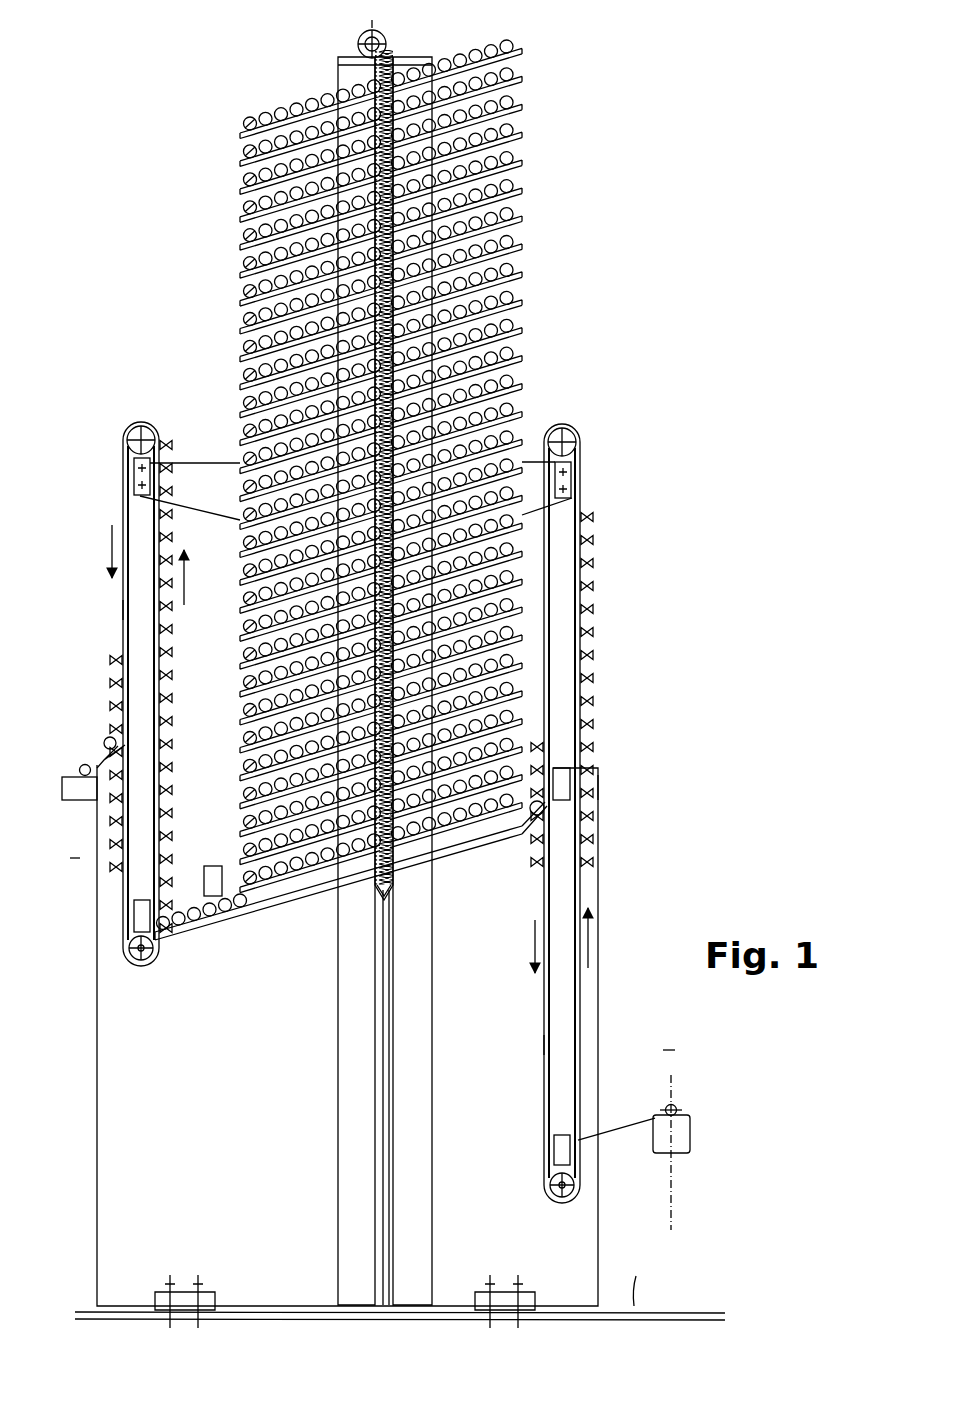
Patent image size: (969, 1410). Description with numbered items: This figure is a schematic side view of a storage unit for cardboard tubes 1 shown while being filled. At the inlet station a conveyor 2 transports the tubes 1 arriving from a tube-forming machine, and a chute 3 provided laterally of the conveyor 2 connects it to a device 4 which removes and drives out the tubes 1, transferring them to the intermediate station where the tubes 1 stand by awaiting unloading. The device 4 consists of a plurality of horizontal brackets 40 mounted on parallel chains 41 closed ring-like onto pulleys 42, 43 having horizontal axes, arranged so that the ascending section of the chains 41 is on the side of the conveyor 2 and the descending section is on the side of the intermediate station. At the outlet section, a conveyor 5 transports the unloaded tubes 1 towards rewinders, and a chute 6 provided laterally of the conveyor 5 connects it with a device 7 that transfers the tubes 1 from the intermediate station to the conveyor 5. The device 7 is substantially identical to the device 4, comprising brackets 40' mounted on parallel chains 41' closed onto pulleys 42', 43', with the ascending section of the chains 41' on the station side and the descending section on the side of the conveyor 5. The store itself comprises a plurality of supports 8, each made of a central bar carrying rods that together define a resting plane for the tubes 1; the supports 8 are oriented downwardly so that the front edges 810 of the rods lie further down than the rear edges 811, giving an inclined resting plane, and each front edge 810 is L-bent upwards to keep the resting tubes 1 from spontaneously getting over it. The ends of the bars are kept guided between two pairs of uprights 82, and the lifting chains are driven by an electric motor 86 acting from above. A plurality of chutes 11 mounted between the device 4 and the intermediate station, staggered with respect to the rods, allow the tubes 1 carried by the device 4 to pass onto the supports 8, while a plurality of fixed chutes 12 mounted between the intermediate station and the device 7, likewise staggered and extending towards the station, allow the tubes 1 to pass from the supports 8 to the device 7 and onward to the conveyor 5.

The tube 1 is at (282, 113).
The conveyor 2 is at (692, 1140).
The chute 3 is at (625, 1118).
The device 4 is at (634, 465).
The conveyor 5 is at (68, 802).
The chute 6 is at (96, 747).
The device 7 is at (72, 407).
The support 8 is at (464, 868).
The chute 11 is at (524, 826).
The fixed chute 12 is at (216, 938).
The horizontal bracket 40 is at (570, 814).
The bracket 40' is at (159, 693).
The chain 41 is at (523, 1046).
The chain 41' is at (101, 609).
The pulley 42 is at (573, 422).
The pulley 42' is at (138, 413).
The pulley 43 is at (551, 1206).
The pulley 43' is at (137, 975).
The upright 82 is at (338, 1180).
The electric motor 86 is at (352, 40).
The front edge 810 is at (236, 380).
The rear edge 811 is at (380, 466).